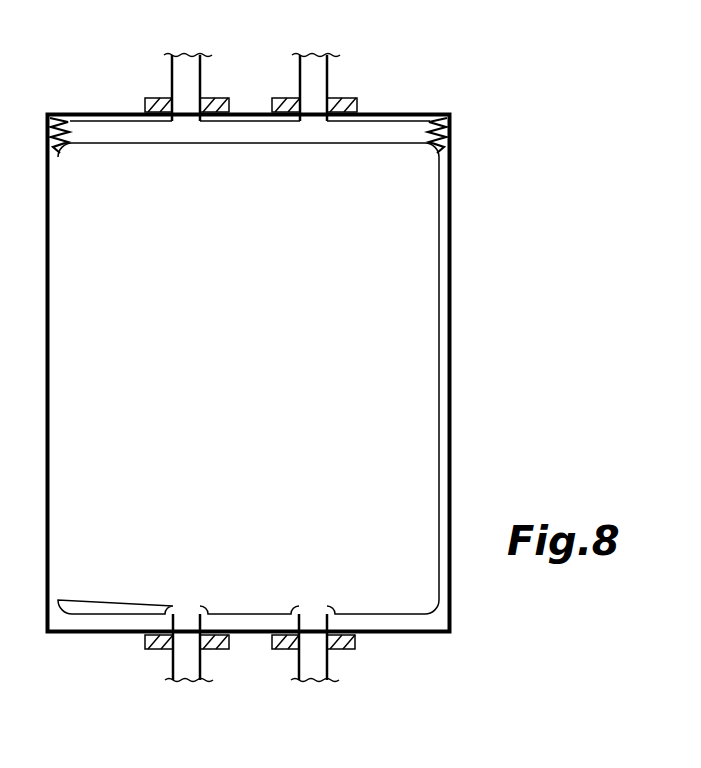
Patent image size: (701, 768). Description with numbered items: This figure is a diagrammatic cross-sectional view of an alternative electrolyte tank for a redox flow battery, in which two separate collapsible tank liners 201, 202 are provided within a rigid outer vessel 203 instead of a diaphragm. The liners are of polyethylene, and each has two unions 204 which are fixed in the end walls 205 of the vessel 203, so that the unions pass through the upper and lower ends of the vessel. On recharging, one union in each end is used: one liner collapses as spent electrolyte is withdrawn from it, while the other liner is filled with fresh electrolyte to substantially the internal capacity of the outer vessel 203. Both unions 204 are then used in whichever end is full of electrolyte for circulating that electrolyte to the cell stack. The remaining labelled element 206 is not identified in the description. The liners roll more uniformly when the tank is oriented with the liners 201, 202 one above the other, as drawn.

The collapsible tank liner 201 is at (445, 133).
The collapsible tank liner 202 is at (438, 266).
The rigid outer vessel 203 is at (452, 333).
The union 204 is at (158, 98).
The end wall 205 is at (285, 99).
The connecting pipe 206 is at (402, 112).